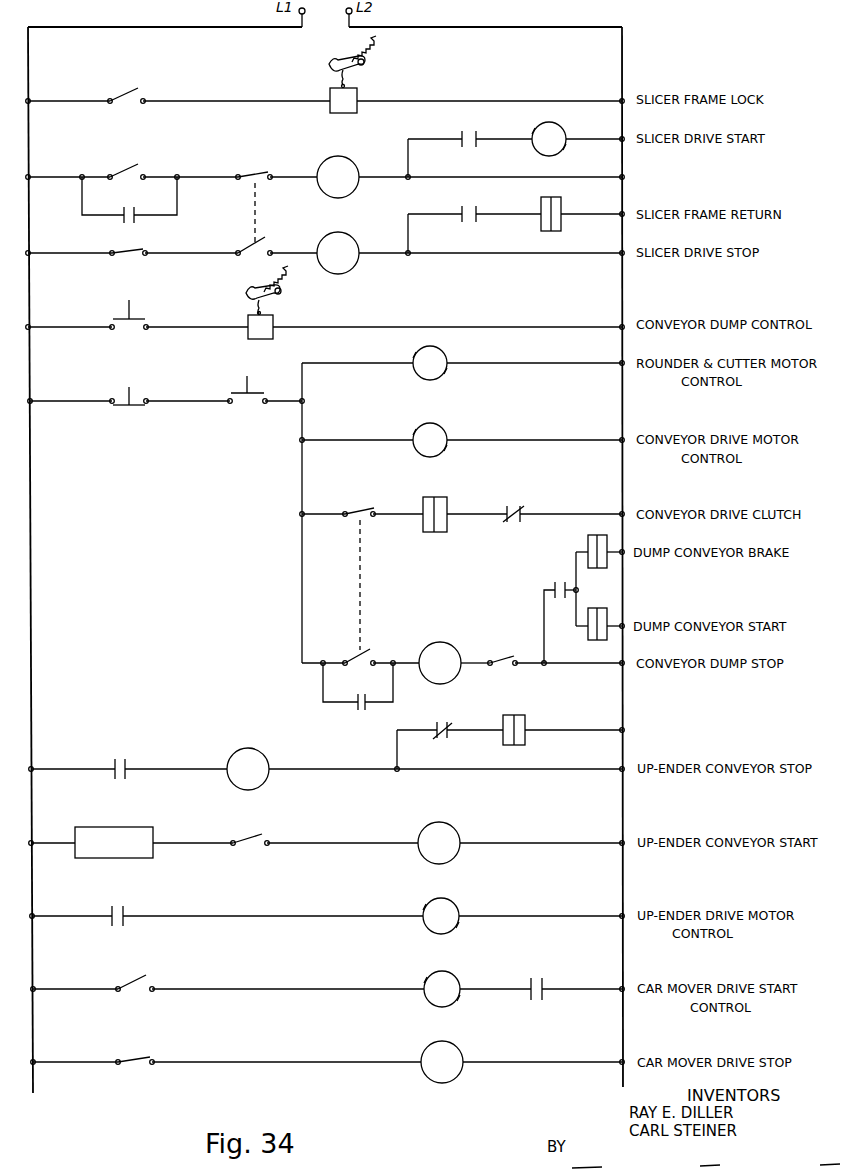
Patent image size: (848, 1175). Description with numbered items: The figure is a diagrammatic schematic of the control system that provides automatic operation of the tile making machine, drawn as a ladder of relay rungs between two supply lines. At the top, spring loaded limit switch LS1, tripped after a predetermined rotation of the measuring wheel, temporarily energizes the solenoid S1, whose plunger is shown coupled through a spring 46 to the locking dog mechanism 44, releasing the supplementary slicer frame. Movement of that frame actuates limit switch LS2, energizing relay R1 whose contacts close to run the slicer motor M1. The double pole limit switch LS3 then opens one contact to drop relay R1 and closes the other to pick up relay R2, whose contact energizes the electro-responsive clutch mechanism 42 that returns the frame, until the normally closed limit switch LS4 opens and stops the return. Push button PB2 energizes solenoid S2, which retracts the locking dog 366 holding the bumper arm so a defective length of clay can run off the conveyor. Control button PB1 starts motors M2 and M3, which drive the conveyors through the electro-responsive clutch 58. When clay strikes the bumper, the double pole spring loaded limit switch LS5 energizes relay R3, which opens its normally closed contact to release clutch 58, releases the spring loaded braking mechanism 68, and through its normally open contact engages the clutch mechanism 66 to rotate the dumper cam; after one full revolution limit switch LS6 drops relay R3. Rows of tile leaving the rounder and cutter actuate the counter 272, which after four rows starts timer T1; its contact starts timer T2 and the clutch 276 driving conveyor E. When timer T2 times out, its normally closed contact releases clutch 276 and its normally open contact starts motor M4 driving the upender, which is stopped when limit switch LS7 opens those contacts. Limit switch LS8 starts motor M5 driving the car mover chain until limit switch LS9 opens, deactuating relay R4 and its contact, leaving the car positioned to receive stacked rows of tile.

The locking dog mechanism 44 is at (330, 69).
The spring 46 is at (351, 56).
The locking dog 366 is at (256, 293).
The electro-responsive clutch mechanism 42 is at (561, 207).
The electro-responsive clutch 58 is at (447, 500).
The spring loaded electro-responsive braking mechanism 68 is at (588, 541).
The electro-responsive clutch mechanism 66 is at (599, 608).
The clutch 276 is at (525, 720).
The counter 272 is at (147, 827).
The solenoid S1 is at (357, 96).
The solenoid S2 is at (273, 319).
The spring loaded limit switch LS1 is at (122, 95).
The spring loaded limit switch LS2 is at (124, 171).
The double pole limit switch LS3 is at (258, 170).
The normally closed limit switch LS4 is at (135, 249).
The double pole spring loaded limit switch LS5 is at (360, 508).
The limit switch LS6 is at (507, 647).
The limit switch LS7 is at (256, 838).
The limit switch LS8 is at (132, 983).
The limit switch LS9 is at (139, 1058).
The control button PB1 is at (252, 389).
The push button PB2 is at (134, 315).
The relay R1 is at (338, 177).
The relay R2 is at (338, 253).
The relay R3 is at (440, 663).
The relay R4 is at (442, 1062).
The timer T1 is at (439, 843).
The timer T2 is at (248, 769).
The motor M1 is at (563, 130).
The motor M2 is at (446, 432).
The motor M3 is at (446, 355).
The motor M4 is at (458, 908).
The motor M5 is at (459, 980).